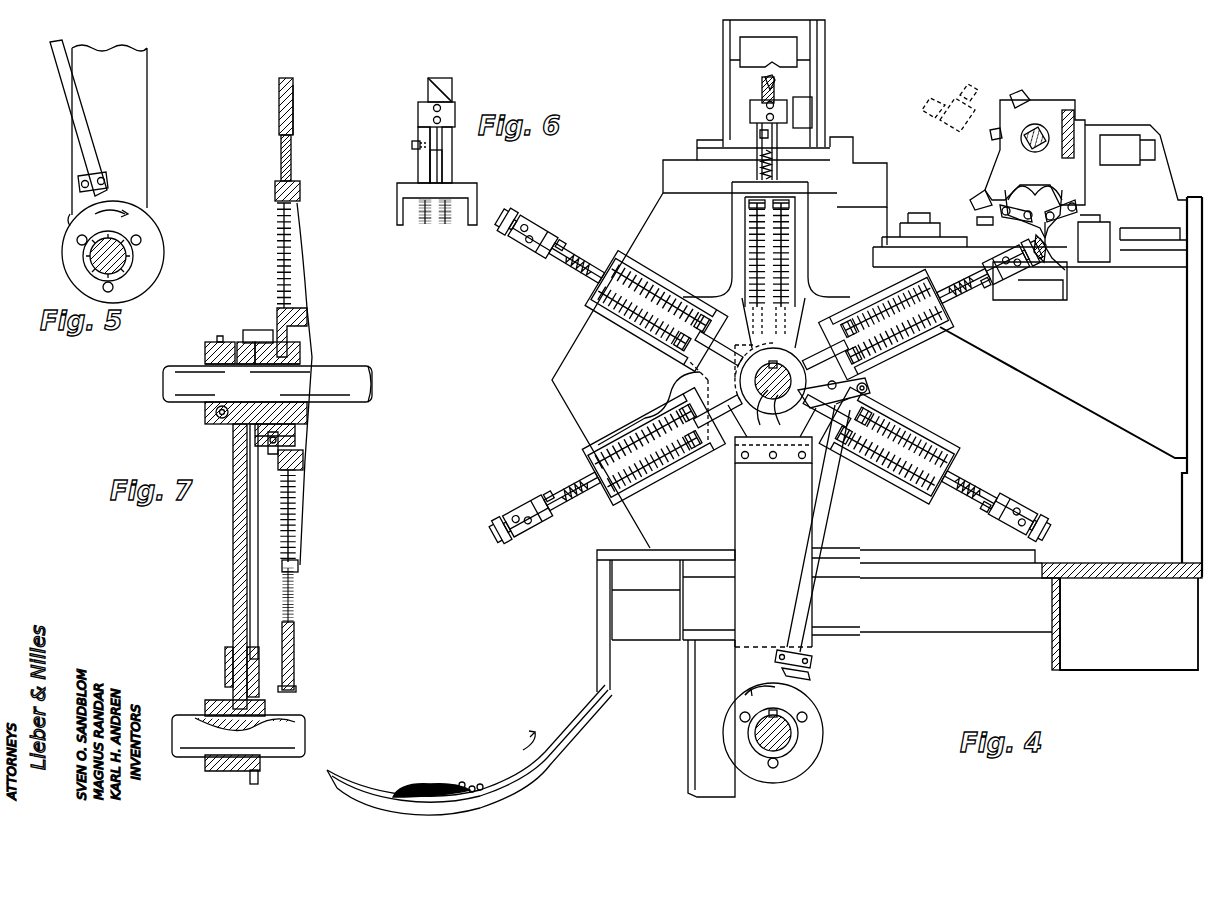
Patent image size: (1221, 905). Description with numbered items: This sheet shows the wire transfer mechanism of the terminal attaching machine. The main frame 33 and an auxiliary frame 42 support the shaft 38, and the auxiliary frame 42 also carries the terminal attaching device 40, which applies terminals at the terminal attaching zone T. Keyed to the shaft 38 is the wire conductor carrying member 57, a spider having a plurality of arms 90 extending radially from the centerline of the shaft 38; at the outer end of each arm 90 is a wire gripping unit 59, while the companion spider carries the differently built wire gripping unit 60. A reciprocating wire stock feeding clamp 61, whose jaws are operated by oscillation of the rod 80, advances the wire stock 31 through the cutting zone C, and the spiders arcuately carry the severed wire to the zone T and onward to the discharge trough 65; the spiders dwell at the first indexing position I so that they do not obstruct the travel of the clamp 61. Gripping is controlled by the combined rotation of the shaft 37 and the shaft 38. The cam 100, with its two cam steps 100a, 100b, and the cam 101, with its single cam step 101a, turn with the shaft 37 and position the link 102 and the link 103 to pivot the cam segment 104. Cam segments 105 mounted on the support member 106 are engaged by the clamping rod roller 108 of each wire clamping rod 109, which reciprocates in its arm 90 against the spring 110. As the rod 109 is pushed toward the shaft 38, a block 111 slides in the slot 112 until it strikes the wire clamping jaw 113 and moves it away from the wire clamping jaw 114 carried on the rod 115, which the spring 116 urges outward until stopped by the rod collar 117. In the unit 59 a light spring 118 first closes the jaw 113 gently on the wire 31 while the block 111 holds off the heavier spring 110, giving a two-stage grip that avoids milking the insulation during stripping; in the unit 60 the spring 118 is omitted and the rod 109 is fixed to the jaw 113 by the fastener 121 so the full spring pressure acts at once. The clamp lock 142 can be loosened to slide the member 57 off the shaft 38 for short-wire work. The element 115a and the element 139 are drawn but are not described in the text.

In FIG. 4, the wire stock 31 is at (1046, 252).
In FIG. 4, the main frame 33 is at (1082, 579).
In FIG. 5, the shaft 37 is at (102, 262).
In FIG. 7, the shaft 37 is at (292, 727).
In FIG. 4, the shaft 37 is at (796, 733).
In FIG. 7, the shaft 38 is at (186, 384).
In FIG. 4, the shaft 38 is at (772, 495).
In FIG. 4, the terminal attaching device 40 is at (711, 52).
In FIG. 4, the auxiliary frame 42 is at (668, 220).
In FIG. 7, the wire conductor carrying member 57 is at (305, 319).
In FIG. 4, the wire conductor carrying member 57 is at (728, 248).
In FIG. 7, the wire gripping unit 59 is at (311, 685).
In FIG. 4, the wire gripping unit 59 is at (534, 229).
In FIG. 6, the wire gripping unit 60 is at (452, 104).
In FIG. 4, the wire stock feeding clamp 61 is at (1076, 194).
In FIG. 4, the discharge trough 65 is at (533, 746).
In FIG. 4, the rod 80 is at (1034, 126).
In FIG. 6, the arms 90 is at (401, 197).
In FIG. 4, the arms 90 is at (654, 288).
In FIG. 7, the cam 100 is at (258, 782).
In FIG. 4, the cam 100 is at (803, 706).
In FIG. 4, the cam step 100a is at (802, 684).
In FIG. 4, the cam step 100b is at (800, 670).
In FIG. 5, the cam 101 is at (162, 238).
In FIG. 5, the cam step 101a is at (70, 220).
In FIG. 7, the link 102 is at (253, 628).
In FIG. 4, the link 102 is at (812, 522).
In FIG. 5, the link 103 is at (80, 152).
In FIG. 4, the cam segment 104 is at (865, 379).
In FIG. 7, the cam segment 105 is at (254, 440).
In FIG. 4, the cam segment 105 is at (780, 448).
In FIG. 7, the support member 106 is at (236, 584).
In FIG. 4, the support member 106 is at (736, 524).
In FIG. 7, the clamping rod roller 108 is at (276, 437).
In FIG. 4, the clamping rod roller 108 is at (702, 454).
In FIG. 7, the wire clamping rod 109 is at (296, 483).
In FIG. 6, the wire clamping rod 109 is at (420, 160).
In FIG. 4, the wire clamping rod 109 is at (660, 360).
In FIG. 7, the spring 110 is at (290, 502).
In FIG. 4, the spring 110 is at (672, 480).
In FIG. 4, the block 111 is at (532, 282).
In FIG. 4, the slot 112 is at (554, 302).
In FIG. 7, the wire clamping jaw 113 is at (279, 91).
In FIG. 6, the wire clamping jaw 113 is at (420, 128).
In FIG. 4, the wire clamping jaw 113 is at (774, 92).
In FIG. 7, the wire clamping jaw 114 is at (278, 77).
In FIG. 6, the wire clamping jaw 114 is at (440, 82).
In FIG. 4, the wire clamping jaw 114 is at (775, 78).
In FIG. 4, the rod 115 is at (580, 252).
In FIG. 4, the rod shoulder 115a is at (594, 262).
In FIG. 4, the spring 116 is at (640, 322).
In FIG. 4, the rod collar 117 is at (622, 274).
In FIG. 7, the spring 118 is at (292, 151).
In FIG. 4, the spring 118 is at (574, 288).
In FIG. 6, the fastener 121 is at (411, 145).
In FIG. 4, the base plate 139 is at (806, 150).
In FIG. 7, the clamp lock 142 is at (220, 338).
In FIG. 4, the terminal attaching zone T is at (806, 115).
In FIG. 4, the first stage indexing position I is at (950, 108).
In FIG. 4, the cutting zone C is at (1046, 246).